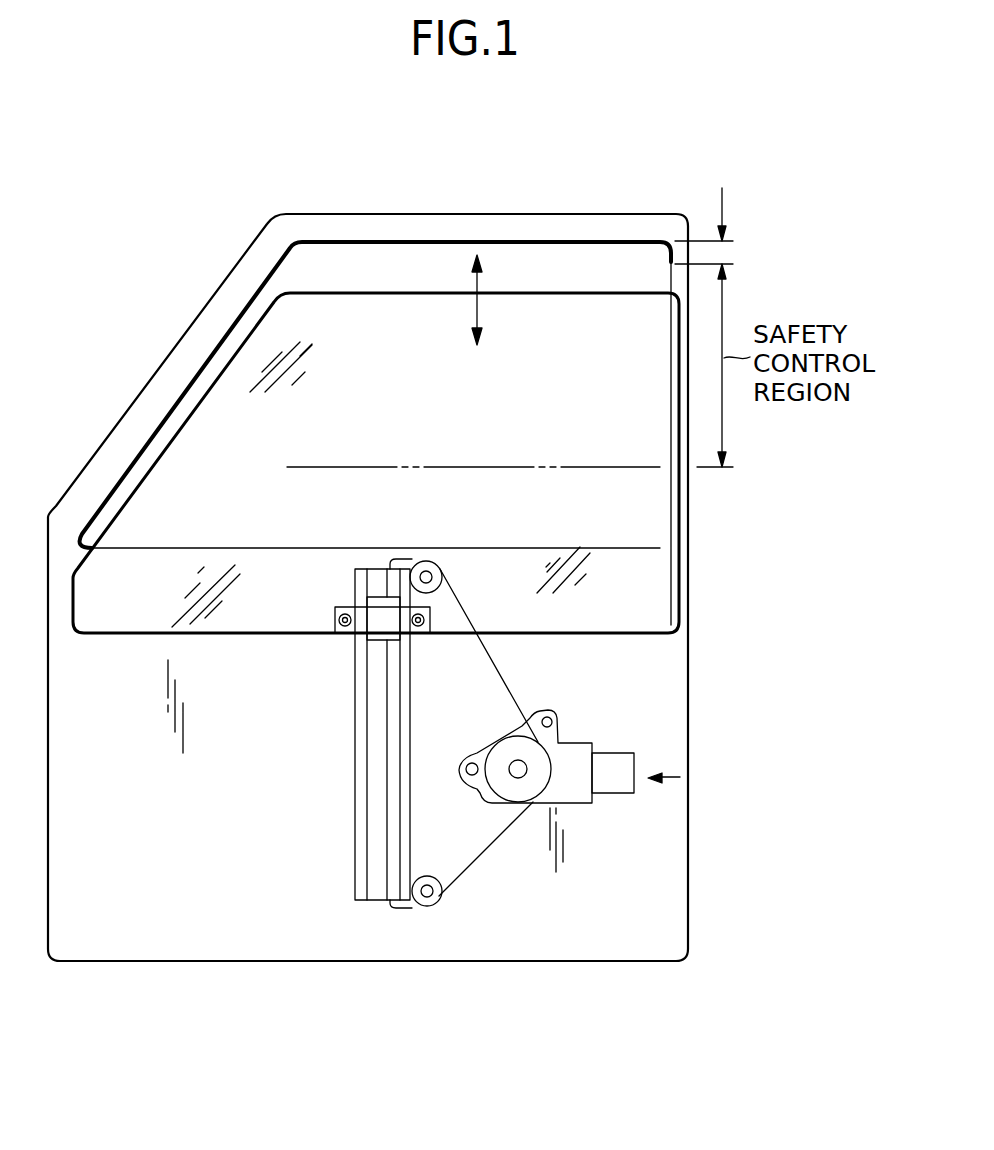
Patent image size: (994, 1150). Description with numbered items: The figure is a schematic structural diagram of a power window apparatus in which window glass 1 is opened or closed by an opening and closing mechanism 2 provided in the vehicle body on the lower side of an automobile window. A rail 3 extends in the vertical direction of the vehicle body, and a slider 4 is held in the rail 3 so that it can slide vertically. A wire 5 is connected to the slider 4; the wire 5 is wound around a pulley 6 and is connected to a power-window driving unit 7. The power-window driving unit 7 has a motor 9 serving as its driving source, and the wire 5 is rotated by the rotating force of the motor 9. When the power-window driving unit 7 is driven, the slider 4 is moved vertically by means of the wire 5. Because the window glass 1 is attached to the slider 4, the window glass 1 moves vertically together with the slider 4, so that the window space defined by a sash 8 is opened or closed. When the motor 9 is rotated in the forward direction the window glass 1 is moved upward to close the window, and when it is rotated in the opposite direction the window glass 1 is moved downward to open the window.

The window glass 1 is at (655, 575).
The opening and closing mechanism 2 is at (680, 777).
The rail 3 is at (360, 863).
The slider 4 is at (381, 623).
The wire 5 is at (473, 867).
The pulley 6 is at (441, 561).
The power-window driving unit 7 is at (563, 787).
The sash 8 is at (414, 213).
The motor 9 is at (620, 752).